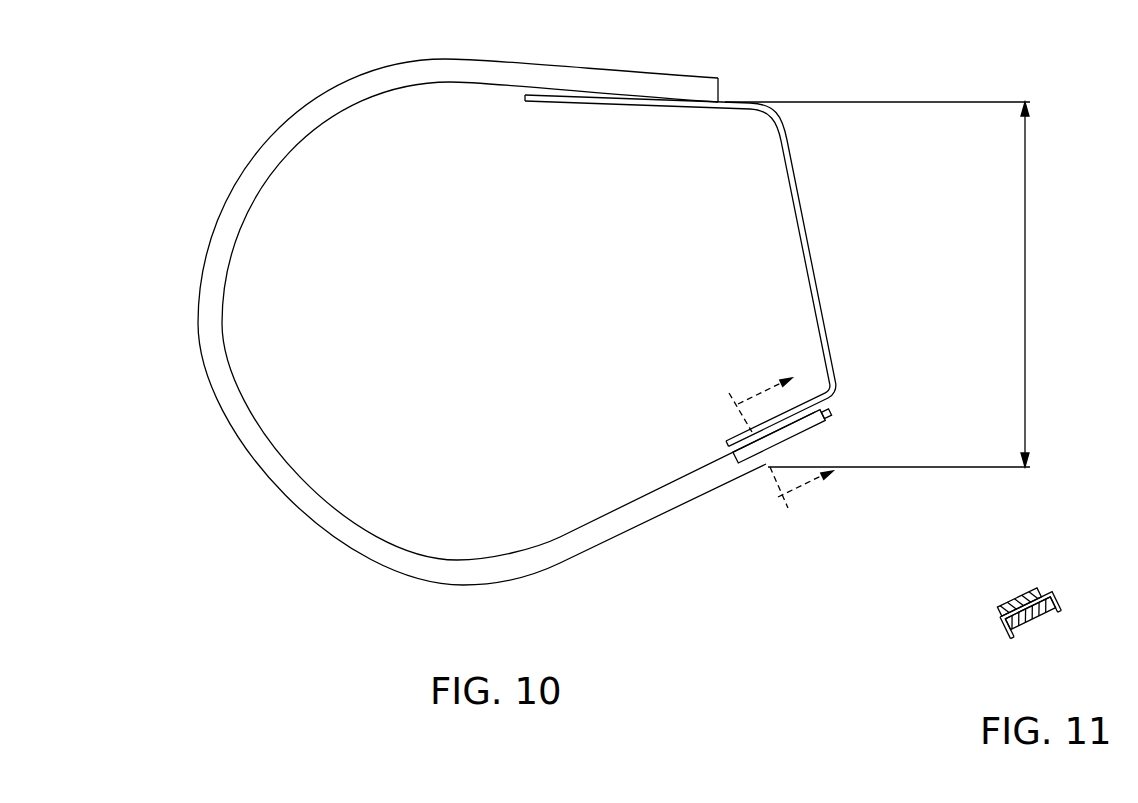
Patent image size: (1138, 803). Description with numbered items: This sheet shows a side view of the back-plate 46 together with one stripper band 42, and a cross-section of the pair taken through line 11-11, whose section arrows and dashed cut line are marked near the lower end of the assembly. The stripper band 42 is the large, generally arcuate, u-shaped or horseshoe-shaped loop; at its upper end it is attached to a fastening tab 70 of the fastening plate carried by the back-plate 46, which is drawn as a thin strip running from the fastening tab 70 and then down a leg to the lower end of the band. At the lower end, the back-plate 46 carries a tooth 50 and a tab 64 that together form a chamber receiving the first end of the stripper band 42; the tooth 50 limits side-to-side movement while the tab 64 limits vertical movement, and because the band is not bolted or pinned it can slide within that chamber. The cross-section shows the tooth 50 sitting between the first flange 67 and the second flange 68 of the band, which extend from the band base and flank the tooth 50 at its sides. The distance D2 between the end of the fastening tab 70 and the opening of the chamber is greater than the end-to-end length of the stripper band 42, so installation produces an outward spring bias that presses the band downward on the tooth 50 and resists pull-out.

In FIG. 10, the stripper band 42 is at (597, 68).
In FIG. 10, the fastening tab 70 is at (625, 108).
In FIG. 10, the back-plate 46 is at (805, 208).
In FIG. 10, the tab 64 is at (826, 396).
In FIG. 11, the tab 64 is at (1019, 598).
In FIG. 10, the tooth 50 is at (831, 416).
In FIG. 11, the tooth 50 is at (1026, 619).
In FIG. 10, the section line 11- 11 is at (771, 452).
In FIG. 10, the distance D2 is at (1030, 240).
In FIG. 11, the first flange 67 is at (1008, 639).
In FIG. 11, the second flange 68 is at (1061, 611).